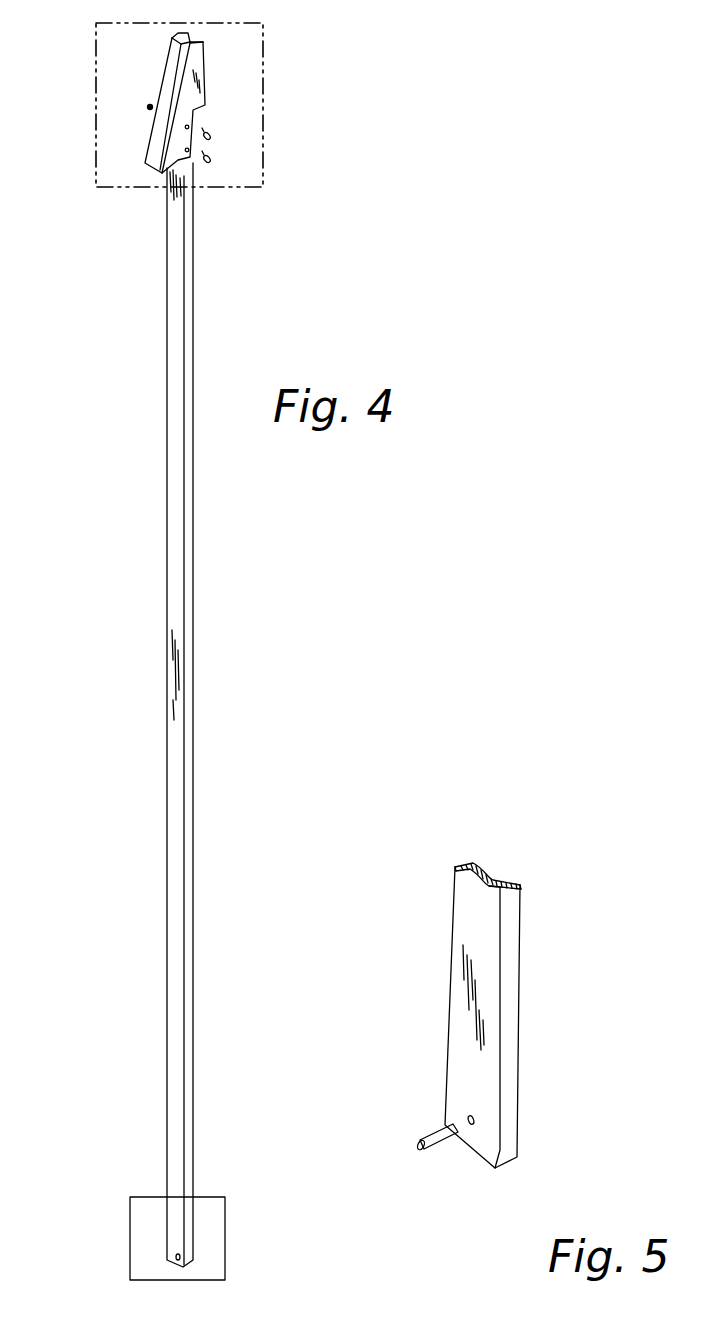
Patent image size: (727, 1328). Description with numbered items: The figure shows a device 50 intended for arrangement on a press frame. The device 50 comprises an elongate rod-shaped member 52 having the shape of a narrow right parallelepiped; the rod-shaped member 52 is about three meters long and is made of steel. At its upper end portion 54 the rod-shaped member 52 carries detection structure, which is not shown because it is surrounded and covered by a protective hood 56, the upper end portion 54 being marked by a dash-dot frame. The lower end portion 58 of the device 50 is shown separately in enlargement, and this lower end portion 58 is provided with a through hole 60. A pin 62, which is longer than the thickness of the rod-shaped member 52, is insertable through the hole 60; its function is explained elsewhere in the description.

In FIG. 4, the device 50 is at (317, 240).
In FIG. 4, the rod-shaped member 52 is at (177, 563).
In FIG. 4, the upper end portion 54 is at (132, 172).
In FIG. 4, the protective hood 56 is at (170, 68).
In FIG. 4, the lower end portion 58 is at (205, 1238).
In FIG. 5, the lower end portion 58 is at (507, 1003).
In FIG. 4, the through hole 60 is at (176, 1253).
In FIG. 5, the through hole 60 is at (468, 1125).
In FIG. 5, the pin 62 is at (445, 1142).